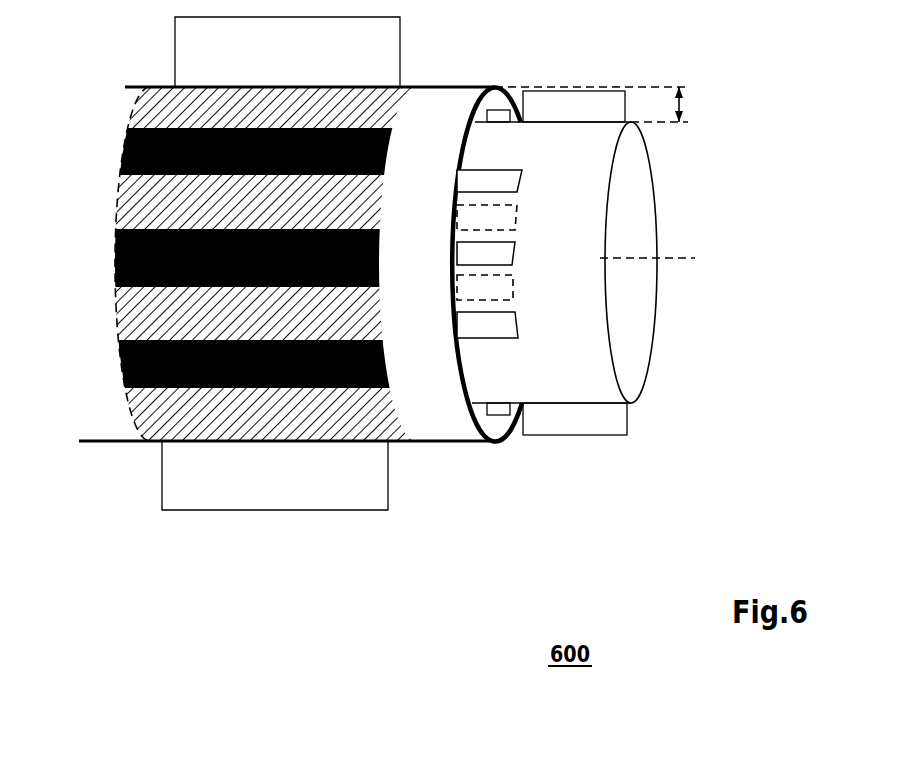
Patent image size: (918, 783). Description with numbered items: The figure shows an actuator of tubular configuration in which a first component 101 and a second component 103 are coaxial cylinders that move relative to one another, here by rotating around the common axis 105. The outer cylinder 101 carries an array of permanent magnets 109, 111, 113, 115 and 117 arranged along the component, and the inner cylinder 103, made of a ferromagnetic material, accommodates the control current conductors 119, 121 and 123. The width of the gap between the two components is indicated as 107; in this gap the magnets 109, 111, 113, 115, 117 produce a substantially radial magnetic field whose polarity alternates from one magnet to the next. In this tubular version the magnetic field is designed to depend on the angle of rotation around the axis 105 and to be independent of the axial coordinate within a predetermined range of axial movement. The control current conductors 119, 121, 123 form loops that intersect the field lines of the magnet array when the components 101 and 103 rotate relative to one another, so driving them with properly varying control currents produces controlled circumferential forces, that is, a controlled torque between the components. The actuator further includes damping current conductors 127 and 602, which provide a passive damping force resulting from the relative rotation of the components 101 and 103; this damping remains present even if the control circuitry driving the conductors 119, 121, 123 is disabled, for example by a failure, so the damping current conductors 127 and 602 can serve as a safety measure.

The first component 101 is at (427, 429).
The second component 103 is at (628, 309).
The axis 105 is at (678, 258).
The gap width 107 is at (685, 102).
The permanent magnet 109 is at (123, 360).
The permanent magnet 111 is at (137, 325).
The permanent magnet 113 is at (113, 253).
The permanent magnet 115 is at (138, 218).
The permanent magnet 117 is at (128, 142).
The control current conductor 119 is at (518, 332).
The control current conductor 121 is at (513, 253).
The control current conductor 123 is at (522, 175).
The damping current conductor 127 is at (513, 290).
The damping current conductor 602 is at (517, 212).